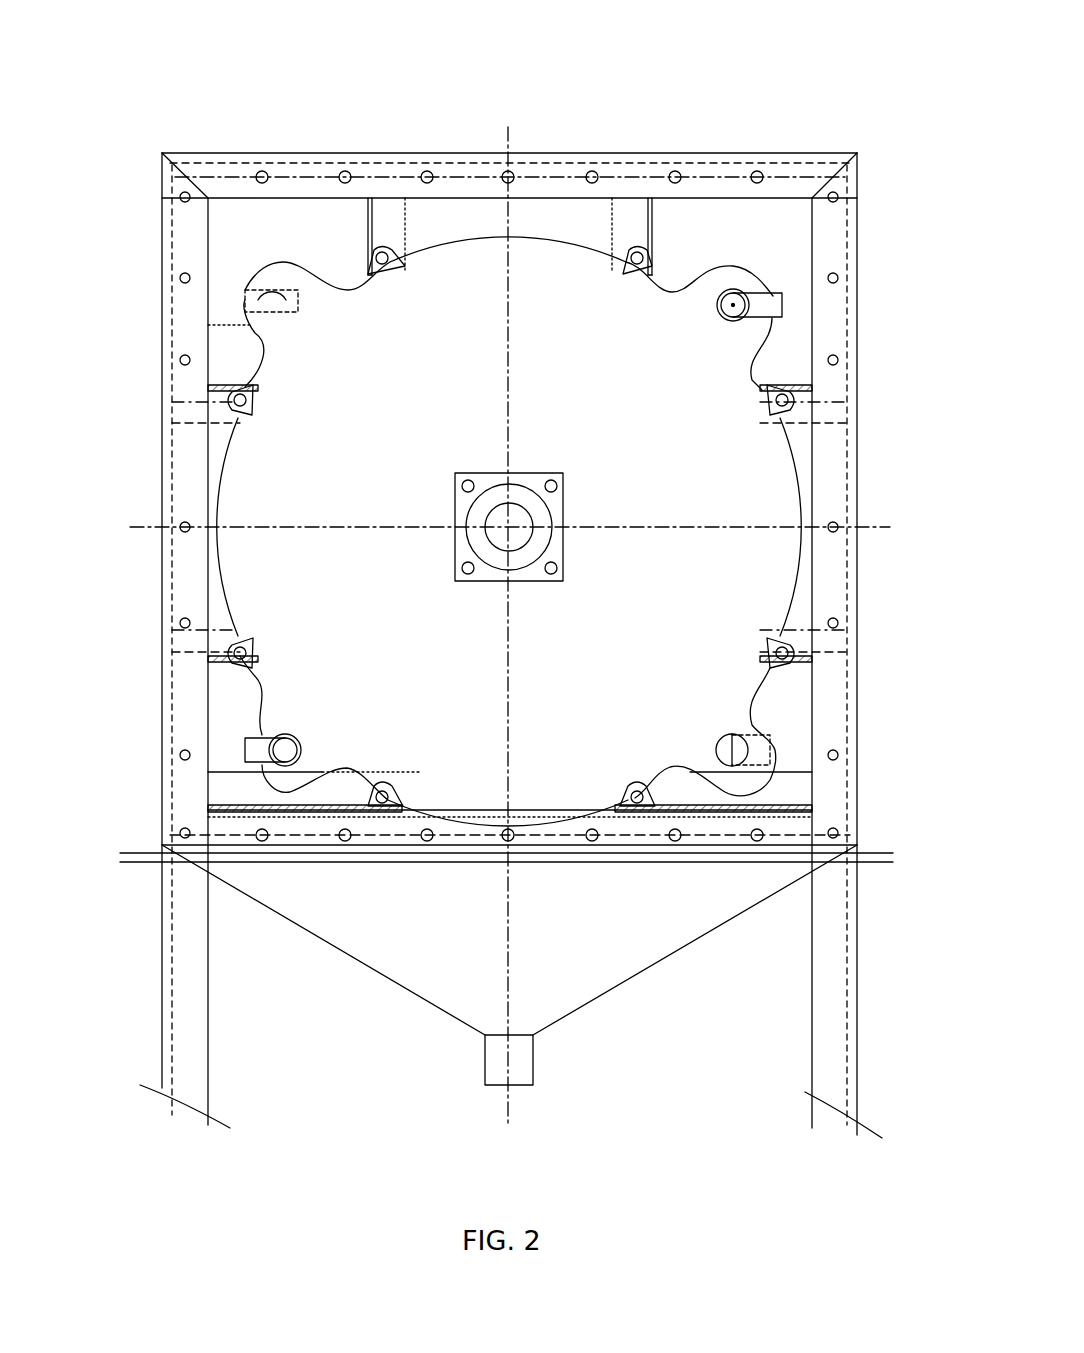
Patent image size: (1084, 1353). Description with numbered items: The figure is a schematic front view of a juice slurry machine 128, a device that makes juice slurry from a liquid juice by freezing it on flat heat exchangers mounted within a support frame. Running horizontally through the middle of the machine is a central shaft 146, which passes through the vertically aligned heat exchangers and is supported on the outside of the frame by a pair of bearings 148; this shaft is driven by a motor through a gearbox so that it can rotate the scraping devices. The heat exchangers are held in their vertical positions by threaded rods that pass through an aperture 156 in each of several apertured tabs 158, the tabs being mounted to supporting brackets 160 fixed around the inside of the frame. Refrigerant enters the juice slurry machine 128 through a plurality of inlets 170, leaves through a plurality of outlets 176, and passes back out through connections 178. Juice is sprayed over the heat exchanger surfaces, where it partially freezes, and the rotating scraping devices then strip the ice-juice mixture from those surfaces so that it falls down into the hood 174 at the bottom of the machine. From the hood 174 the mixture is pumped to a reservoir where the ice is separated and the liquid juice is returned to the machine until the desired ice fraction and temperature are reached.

The juice slurry machine 128 is at (147, 280).
The central shaft 146 is at (490, 520).
The bearings 148 is at (466, 584).
The aperture 156 is at (637, 256).
The apertured tabs 158 is at (618, 258).
The supporting brackets 160 is at (655, 222).
The inlets 170 is at (745, 313).
The hood 174 is at (375, 975).
The outlets 176 is at (268, 300).
The connections 178 is at (508, 127).